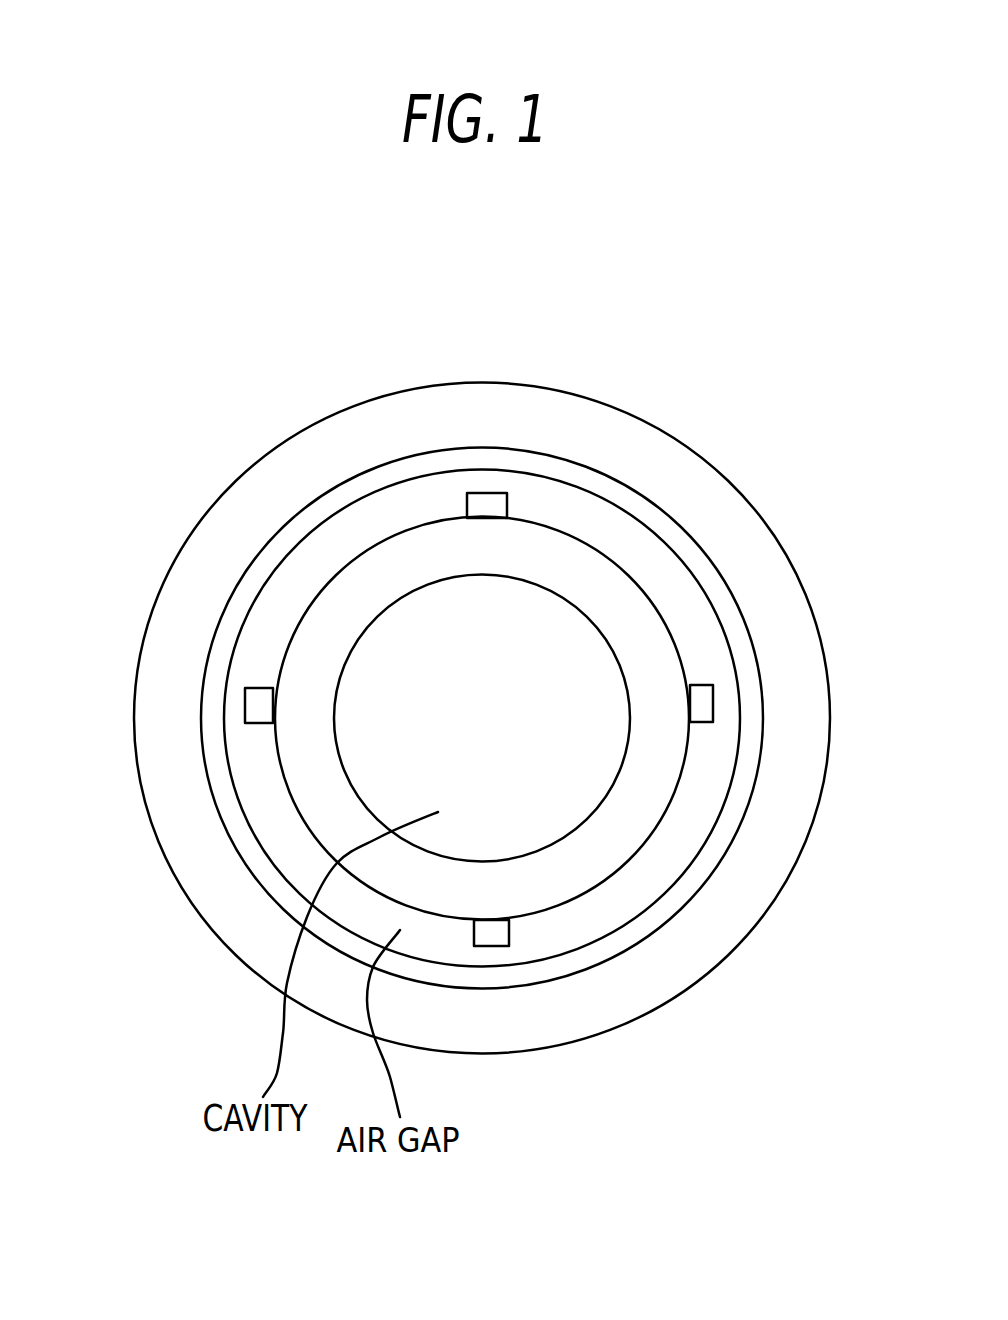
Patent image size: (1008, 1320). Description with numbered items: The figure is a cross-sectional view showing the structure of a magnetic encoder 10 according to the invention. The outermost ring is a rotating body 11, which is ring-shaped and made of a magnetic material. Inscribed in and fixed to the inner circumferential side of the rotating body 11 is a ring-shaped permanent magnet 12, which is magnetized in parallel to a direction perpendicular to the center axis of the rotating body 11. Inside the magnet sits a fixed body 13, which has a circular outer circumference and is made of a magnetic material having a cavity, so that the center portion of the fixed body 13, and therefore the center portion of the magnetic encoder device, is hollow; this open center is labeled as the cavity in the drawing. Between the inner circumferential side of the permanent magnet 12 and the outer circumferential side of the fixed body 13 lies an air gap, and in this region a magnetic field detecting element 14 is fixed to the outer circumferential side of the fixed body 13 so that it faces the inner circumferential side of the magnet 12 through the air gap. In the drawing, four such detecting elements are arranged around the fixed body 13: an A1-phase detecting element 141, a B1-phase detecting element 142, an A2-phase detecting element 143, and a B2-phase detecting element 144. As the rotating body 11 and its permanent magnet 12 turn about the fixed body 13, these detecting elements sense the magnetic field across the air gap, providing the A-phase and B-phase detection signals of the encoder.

The magnetic encoder 10 is at (430, 326).
The rotating body 11 is at (676, 462).
The permanent magnet 12 is at (683, 545).
The fixed body 13 is at (337, 613).
The magnetic field detecting element 14 is at (462, 703).
The A1-phase detecting element 141 is at (490, 503).
The B1-phase detecting element 142 is at (703, 703).
The A2-phase detecting element 143 is at (490, 930).
The B2-phase detecting element 144 is at (258, 707).